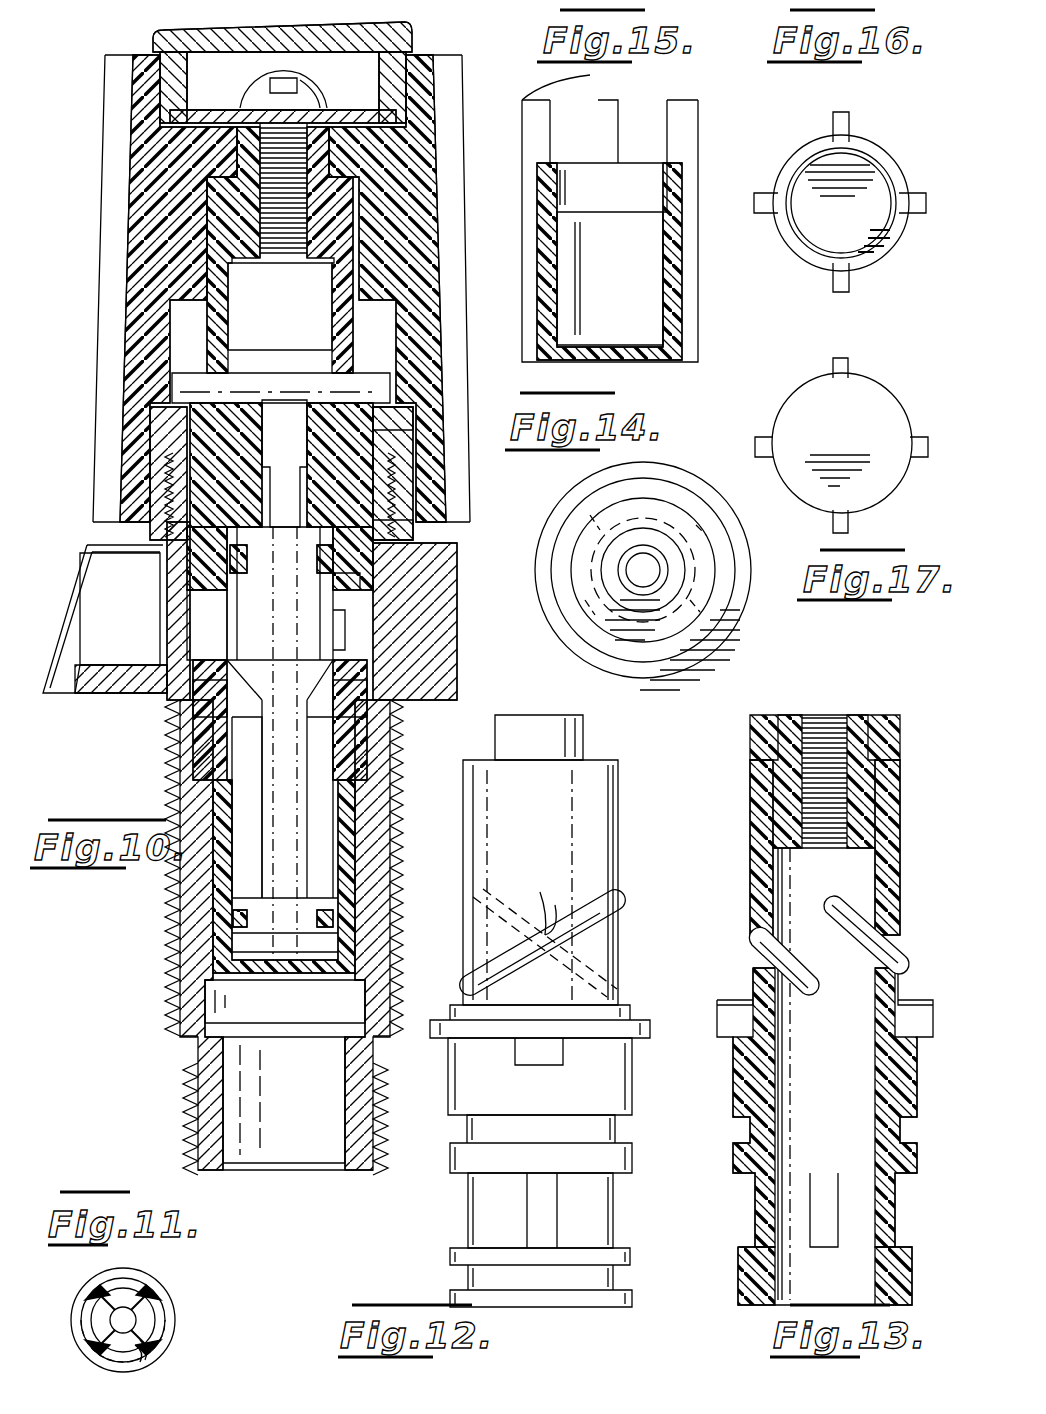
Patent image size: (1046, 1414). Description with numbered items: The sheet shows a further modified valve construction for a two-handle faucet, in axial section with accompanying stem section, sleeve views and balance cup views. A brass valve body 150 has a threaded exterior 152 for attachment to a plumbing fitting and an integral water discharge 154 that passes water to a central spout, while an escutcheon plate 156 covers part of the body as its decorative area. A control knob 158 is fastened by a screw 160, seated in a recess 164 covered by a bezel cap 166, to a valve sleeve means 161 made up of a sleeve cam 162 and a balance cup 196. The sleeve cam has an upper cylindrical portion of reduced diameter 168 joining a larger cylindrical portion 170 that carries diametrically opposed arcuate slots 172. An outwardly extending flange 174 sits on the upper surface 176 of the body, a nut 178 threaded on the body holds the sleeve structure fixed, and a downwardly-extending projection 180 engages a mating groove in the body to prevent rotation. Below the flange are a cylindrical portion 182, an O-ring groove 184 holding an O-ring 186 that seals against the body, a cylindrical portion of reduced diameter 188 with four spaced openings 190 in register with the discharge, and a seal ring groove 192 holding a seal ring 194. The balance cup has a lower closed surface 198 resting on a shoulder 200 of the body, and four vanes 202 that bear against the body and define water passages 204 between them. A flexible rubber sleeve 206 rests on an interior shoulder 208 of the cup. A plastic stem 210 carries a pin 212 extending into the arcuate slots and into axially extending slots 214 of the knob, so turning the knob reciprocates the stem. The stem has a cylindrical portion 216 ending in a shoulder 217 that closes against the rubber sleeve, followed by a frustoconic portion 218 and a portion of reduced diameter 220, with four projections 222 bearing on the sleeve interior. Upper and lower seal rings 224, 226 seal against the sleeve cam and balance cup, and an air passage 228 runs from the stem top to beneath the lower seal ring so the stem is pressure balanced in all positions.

In FIG. 10, the valve body 150 is at (180, 1013).
In FIG. 10, the threaded exterior 152 is at (380, 1010).
In FIG. 10, the water discharge 154 is at (457, 668).
In FIG. 10, the escutcheon plate 156 is at (75, 608).
In FIG. 10, the control knob 158 is at (440, 245).
In FIG. 10, the screw 160 is at (255, 95).
In FIG. 10, the valve sleeve means 161 is at (355, 205).
In FIG. 12, the valve sleeve means 161 is at (628, 806).
In FIG. 13, the valve sleeve means 161 is at (912, 806).
In FIG. 12, the sleeve cam 162 is at (620, 870).
In FIG. 10, the recess 164 is at (392, 84).
In FIG. 10, the bezel cap 166 is at (412, 42).
In FIG. 12, the upper cylindrical portion of reduced diameter 168 is at (585, 738).
In FIG. 13, the upper cylindrical portion of reduced diameter 168 is at (868, 736).
In FIG. 14, the upper cylindrical portion of reduced diameter 168 is at (648, 530).
In FIG. 12, the larger cylindrical portion 170 is at (615, 938).
In FIG. 14, the larger cylindrical portion 170 is at (720, 616).
In FIG. 12, the arcuate slots 172 is at (526, 905).
In FIG. 13, the arcuate slots 172 is at (846, 970).
In FIG. 14, the arcuate slots 172 is at (540, 607).
In FIG. 12, the outwardly extending flange 174 is at (650, 1026).
In FIG. 14, the outwardly extending flange 174 is at (720, 652).
In FIG. 10, the upper surface 176 is at (150, 430).
In FIG. 10, the nut 178 is at (400, 495).
In FIG. 10, the downwardly-extending projection 180 is at (395, 466).
In FIG. 12, the downwardly-extending projection 180 is at (540, 1066).
In FIG. 14, the downwardly-extending projection 180 is at (662, 680).
In FIG. 12, the cylindrical portion 182 is at (632, 1086).
In FIG. 12, the O-ring groove 184 is at (632, 1136).
In FIG. 10, the O-ring 186 is at (395, 522).
In FIG. 12, the cylindrical portion of reduced diameter 188 is at (470, 1213).
In FIG. 10, the openings 190 is at (340, 652).
In FIG. 12, the openings 190 is at (550, 1235).
In FIG. 13, the openings 190 is at (875, 1185).
In FIG. 12, the seal ring groove 192 is at (625, 1272).
In FIG. 13, the seal ring groove 192 is at (925, 1278).
In FIG. 10, the seal ring 194 is at (370, 700).
In FIG. 10, the balance cup 196 is at (225, 885).
In FIG. 15, the balance cup 196 is at (682, 283).
In FIG. 16, the balance cup 196 is at (815, 272).
In FIG. 17, the balance cup 196 is at (866, 513).
In FIG. 10, the lower closed surface 198 is at (292, 1023).
In FIG. 15, the lower closed surface 198 is at (650, 362).
In FIG. 17, the lower closed surface 198 is at (808, 405).
In FIG. 10, the shoulder 200 is at (365, 990).
In FIG. 15, the vanes 202 is at (680, 100).
In FIG. 16, the vanes 202 is at (920, 195).
In FIG. 17, the vanes 202 is at (852, 368).
In FIG. 10, the water passages 204 is at (195, 962).
In FIG. 16, the water passages 204 is at (870, 266).
In FIG. 10, the flexible rubber sleeve 206 is at (340, 745).
In FIG. 10, the interior shoulder 208 is at (340, 812).
In FIG. 15, the interior shoulder 208 is at (665, 212).
In FIG. 16, the interior shoulder 208 is at (893, 220).
In FIG. 10, the stem 210 is at (340, 613).
In FIG. 11, the stem 210 is at (175, 1298).
In FIG. 10, the pin 212 is at (290, 373).
In FIG. 10, the axially extending slots 214 is at (332, 312).
In FIG. 10, the cylindrical portion 216 is at (240, 597).
In FIG. 11, the cylindrical portion 216 is at (158, 1365).
In FIG. 10, the shoulder 217 is at (197, 657).
In FIG. 11, the shoulder 217 is at (172, 1322).
In FIG. 10, the frustoconic portion 218 is at (258, 667).
In FIG. 11, the frustoconic portion 218 is at (160, 1342).
In FIG. 10, the portion of reduced diameter 220 is at (288, 863).
In FIG. 11, the portion of reduced diameter 220 is at (108, 1350).
In FIG. 10, the projections 222 is at (290, 872).
In FIG. 11, the projections 222 is at (102, 1298).
In FIG. 10, the upper seal ring 224 is at (230, 560).
In FIG. 10, the lower seal ring 226 is at (232, 920).
In FIG. 10, the air passage 228 is at (283, 470).
In FIG. 11, the air passage 228 is at (140, 1290).